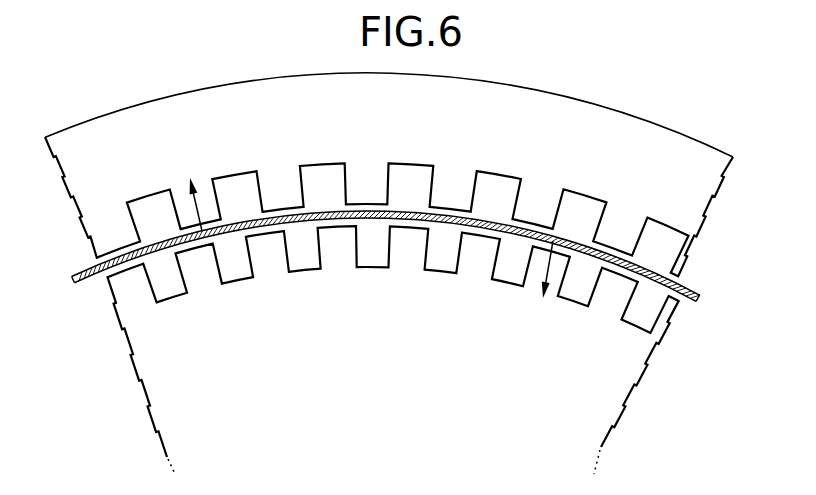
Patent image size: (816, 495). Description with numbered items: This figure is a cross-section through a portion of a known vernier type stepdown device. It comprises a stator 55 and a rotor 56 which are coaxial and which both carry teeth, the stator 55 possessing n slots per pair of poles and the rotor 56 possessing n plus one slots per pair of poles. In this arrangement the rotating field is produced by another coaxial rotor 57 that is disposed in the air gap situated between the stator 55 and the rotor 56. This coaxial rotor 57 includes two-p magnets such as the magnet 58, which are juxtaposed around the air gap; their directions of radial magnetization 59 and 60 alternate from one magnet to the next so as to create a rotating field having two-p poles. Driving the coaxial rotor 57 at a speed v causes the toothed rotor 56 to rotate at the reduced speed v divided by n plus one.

The stator 55 is at (613, 133).
The rotor 56 is at (598, 365).
The coaxial rotor 57 is at (315, 215).
The magnet 58 is at (452, 215).
The direction of radial magnetization 59 is at (196, 203).
The direction of radial magnetization 60 is at (545, 262).